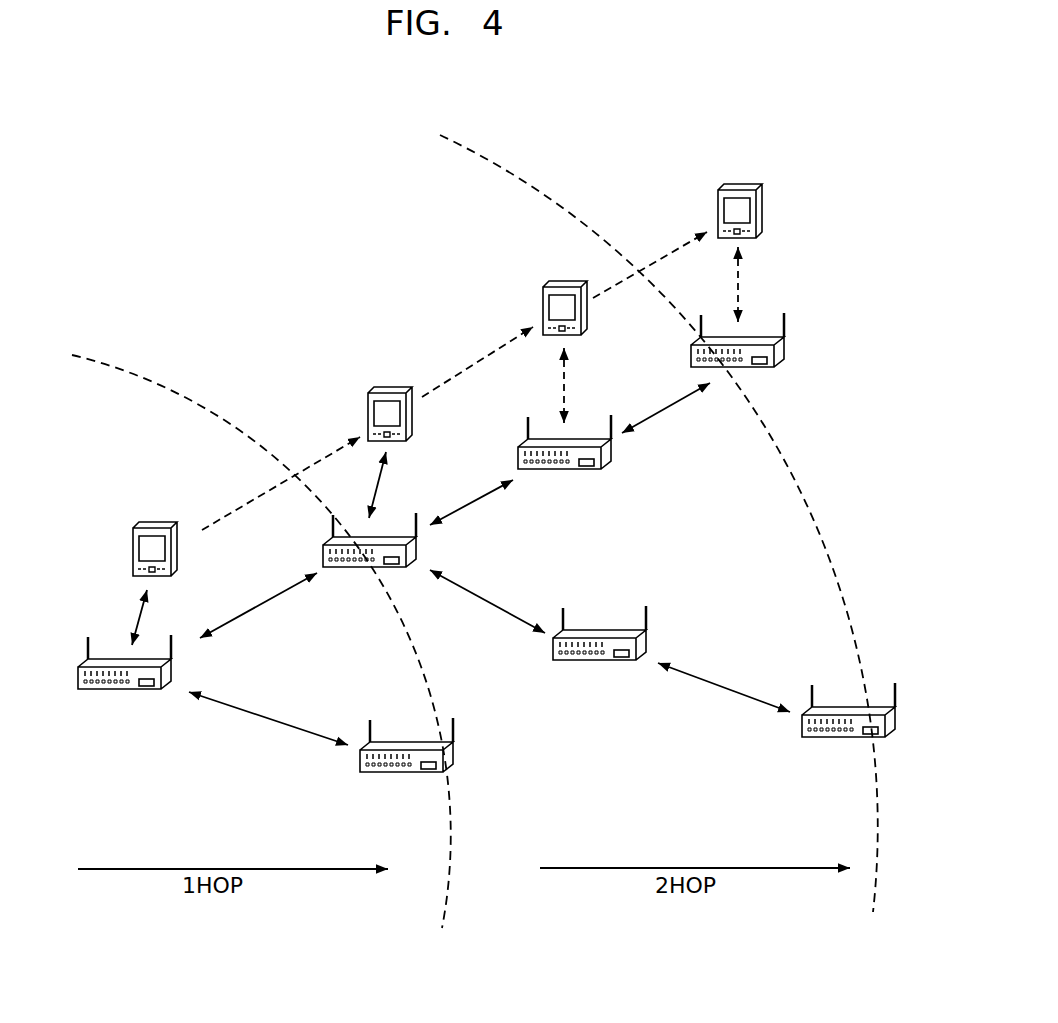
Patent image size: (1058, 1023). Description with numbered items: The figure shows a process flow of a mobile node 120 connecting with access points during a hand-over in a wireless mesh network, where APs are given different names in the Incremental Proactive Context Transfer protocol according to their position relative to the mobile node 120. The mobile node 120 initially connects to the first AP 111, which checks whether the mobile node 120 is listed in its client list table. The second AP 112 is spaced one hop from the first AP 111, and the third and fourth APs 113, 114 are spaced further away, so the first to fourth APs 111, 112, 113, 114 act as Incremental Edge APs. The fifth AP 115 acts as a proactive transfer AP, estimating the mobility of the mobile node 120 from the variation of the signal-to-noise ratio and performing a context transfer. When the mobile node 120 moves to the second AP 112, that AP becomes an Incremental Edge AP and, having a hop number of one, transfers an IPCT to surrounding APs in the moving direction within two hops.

The first AP 111 is at (174, 672).
The second AP 112 is at (417, 545).
The third AP 113 is at (786, 347).
The fourth AP 114 is at (842, 737).
The fifth AP 115 is at (612, 447).
The mobile node 120 is at (133, 528).